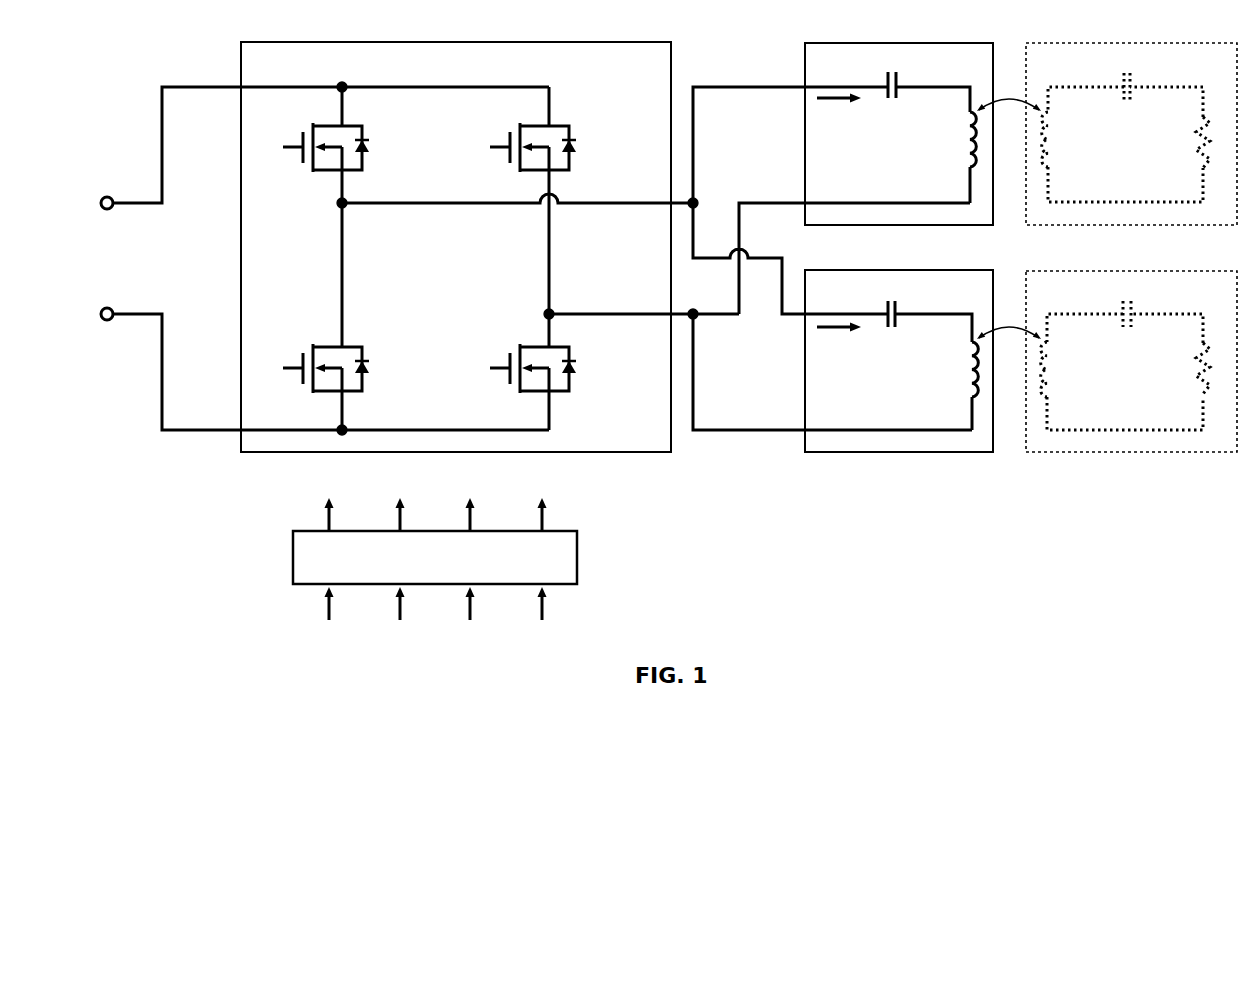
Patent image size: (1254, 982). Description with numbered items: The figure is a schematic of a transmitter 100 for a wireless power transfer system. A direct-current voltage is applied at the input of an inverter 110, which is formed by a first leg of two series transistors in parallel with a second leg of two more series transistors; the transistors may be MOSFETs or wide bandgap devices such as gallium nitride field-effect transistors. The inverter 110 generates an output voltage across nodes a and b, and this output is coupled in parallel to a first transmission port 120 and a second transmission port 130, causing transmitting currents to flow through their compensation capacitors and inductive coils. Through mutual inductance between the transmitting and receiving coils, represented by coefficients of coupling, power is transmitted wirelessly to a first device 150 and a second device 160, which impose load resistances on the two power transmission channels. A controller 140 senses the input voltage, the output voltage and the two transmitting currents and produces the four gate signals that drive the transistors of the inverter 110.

The transmitter 100 is at (158, 58).
The inverter 110 is at (655, 74).
The first transmission port 120 is at (983, 74).
The second transmission port 130 is at (983, 300).
The controller 140 is at (520, 571).
The first device 150 is at (1226, 74).
The second device 160 is at (1226, 300).